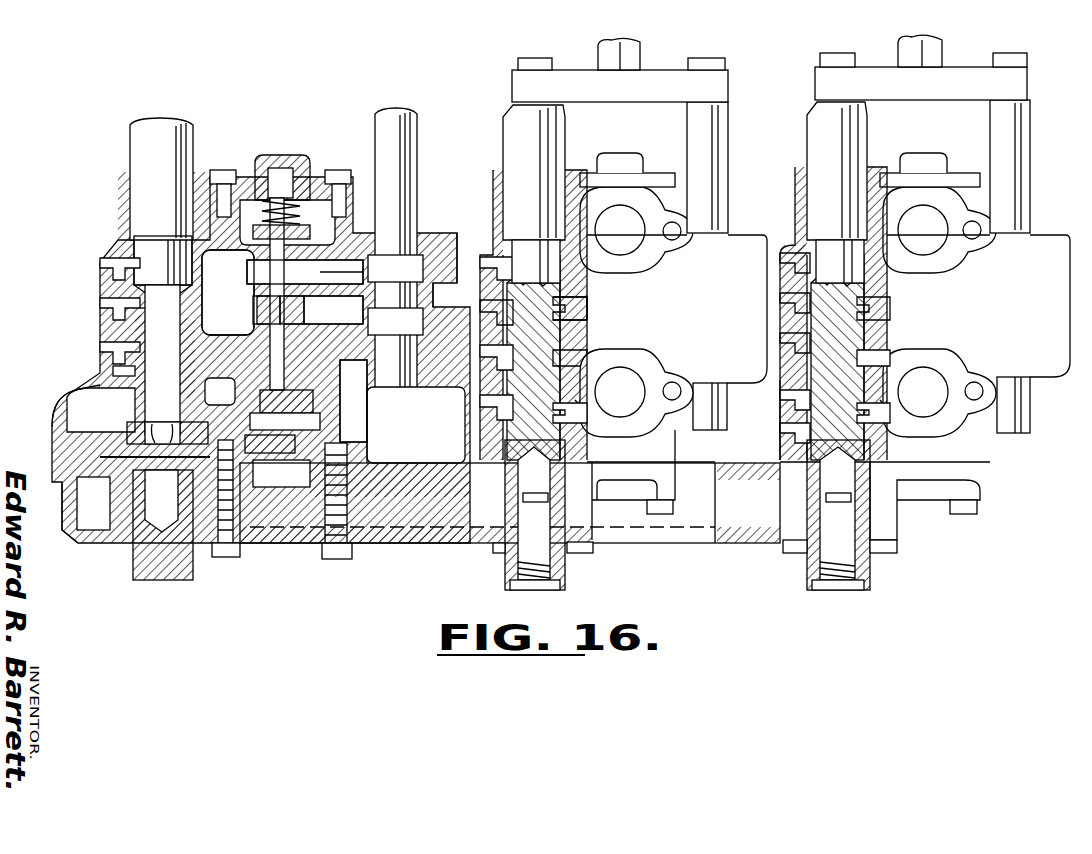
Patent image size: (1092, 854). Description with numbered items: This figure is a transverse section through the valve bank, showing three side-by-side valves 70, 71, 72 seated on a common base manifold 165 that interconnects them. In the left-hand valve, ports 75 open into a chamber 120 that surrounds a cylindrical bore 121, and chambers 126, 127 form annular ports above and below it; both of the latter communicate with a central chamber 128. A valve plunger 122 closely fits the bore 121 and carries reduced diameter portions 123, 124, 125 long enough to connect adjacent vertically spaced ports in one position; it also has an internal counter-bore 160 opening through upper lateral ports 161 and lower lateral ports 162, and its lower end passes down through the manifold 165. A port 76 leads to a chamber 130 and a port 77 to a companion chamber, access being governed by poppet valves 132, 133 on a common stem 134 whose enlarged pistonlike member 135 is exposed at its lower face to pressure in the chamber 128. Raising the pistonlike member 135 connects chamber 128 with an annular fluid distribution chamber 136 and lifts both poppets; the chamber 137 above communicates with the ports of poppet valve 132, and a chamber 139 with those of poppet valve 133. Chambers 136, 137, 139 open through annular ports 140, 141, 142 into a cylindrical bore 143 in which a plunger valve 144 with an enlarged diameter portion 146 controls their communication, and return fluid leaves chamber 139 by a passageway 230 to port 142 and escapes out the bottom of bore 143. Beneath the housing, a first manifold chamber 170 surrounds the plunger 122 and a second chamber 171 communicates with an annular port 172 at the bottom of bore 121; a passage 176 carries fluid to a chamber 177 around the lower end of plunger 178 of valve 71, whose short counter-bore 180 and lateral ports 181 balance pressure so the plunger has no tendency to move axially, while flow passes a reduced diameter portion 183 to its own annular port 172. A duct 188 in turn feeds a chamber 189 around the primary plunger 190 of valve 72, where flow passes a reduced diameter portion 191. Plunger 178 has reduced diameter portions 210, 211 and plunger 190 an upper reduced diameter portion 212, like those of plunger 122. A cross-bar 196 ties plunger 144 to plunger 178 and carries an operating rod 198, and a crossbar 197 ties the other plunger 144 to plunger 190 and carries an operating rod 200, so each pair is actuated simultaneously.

The valve housing 70 is at (118, 220).
The valve 71 is at (493, 225).
The valve 72 is at (1030, 230).
The ports 75 is at (113, 370).
The escape port 76 is at (325, 180).
The port 77 is at (367, 440).
The chamber 120 is at (100, 303).
The cylindrical bore 121 is at (120, 185).
The valve plunger 122 is at (193, 125).
The reduced diameter portion 123 is at (163, 260).
The reduced diameter portion 124 is at (100, 386).
The reduced diameter portion 125 is at (120, 420).
The chamber 126 is at (100, 265).
The chamber 127 is at (100, 347).
The central chamber 128 is at (228, 306).
The chamber 130 is at (258, 200).
The poppet valve 132 is at (290, 200).
The poppet valve 133 is at (268, 375).
The stem 134 is at (305, 267).
The pistonlike member 135 is at (329, 279).
The annular fluid distribution chamber 136 is at (333, 310).
The chamber 137 is at (281, 301).
The chamber 139 is at (281, 473).
The annular port 140 is at (462, 300).
The annular port 141 is at (440, 283).
The annular port 142 is at (440, 340).
The cylindrical bore 143 is at (380, 225).
The plunger valve 144 is at (408, 150).
The enlarged diameter portion 146 is at (395, 321).
The internal counter-bore 160 is at (165, 360).
The lateral ports 161 is at (140, 310).
The lateral ports 162 is at (167, 422).
The manifold 165 is at (78, 543).
The chamber 170 is at (233, 557).
The chamber 171 is at (103, 530).
The annular port 172 is at (576, 406).
The passage 176 is at (430, 530).
The chamber 177 is at (572, 555).
The plunger 178 is at (565, 145).
The counter-bore 180 is at (535, 515).
The lateral ports 181 is at (538, 502).
The reduced diameter portion 183 is at (480, 440).
The duct 188 is at (740, 520).
The chamber 189 is at (897, 535).
The primary plunger 190 is at (815, 145).
The reduced diameter portion 191 is at (785, 425).
The cross-bar 196 is at (655, 88).
The crossbar 197 is at (955, 88).
The operating rod 198 is at (598, 55).
The operating rod 200 is at (900, 52).
The reduced diameter portion 210 is at (570, 320).
The reduced diameter portion 211 is at (572, 365).
The reduced diameter portion 212 is at (880, 325).
The passageway 230 is at (341, 450).